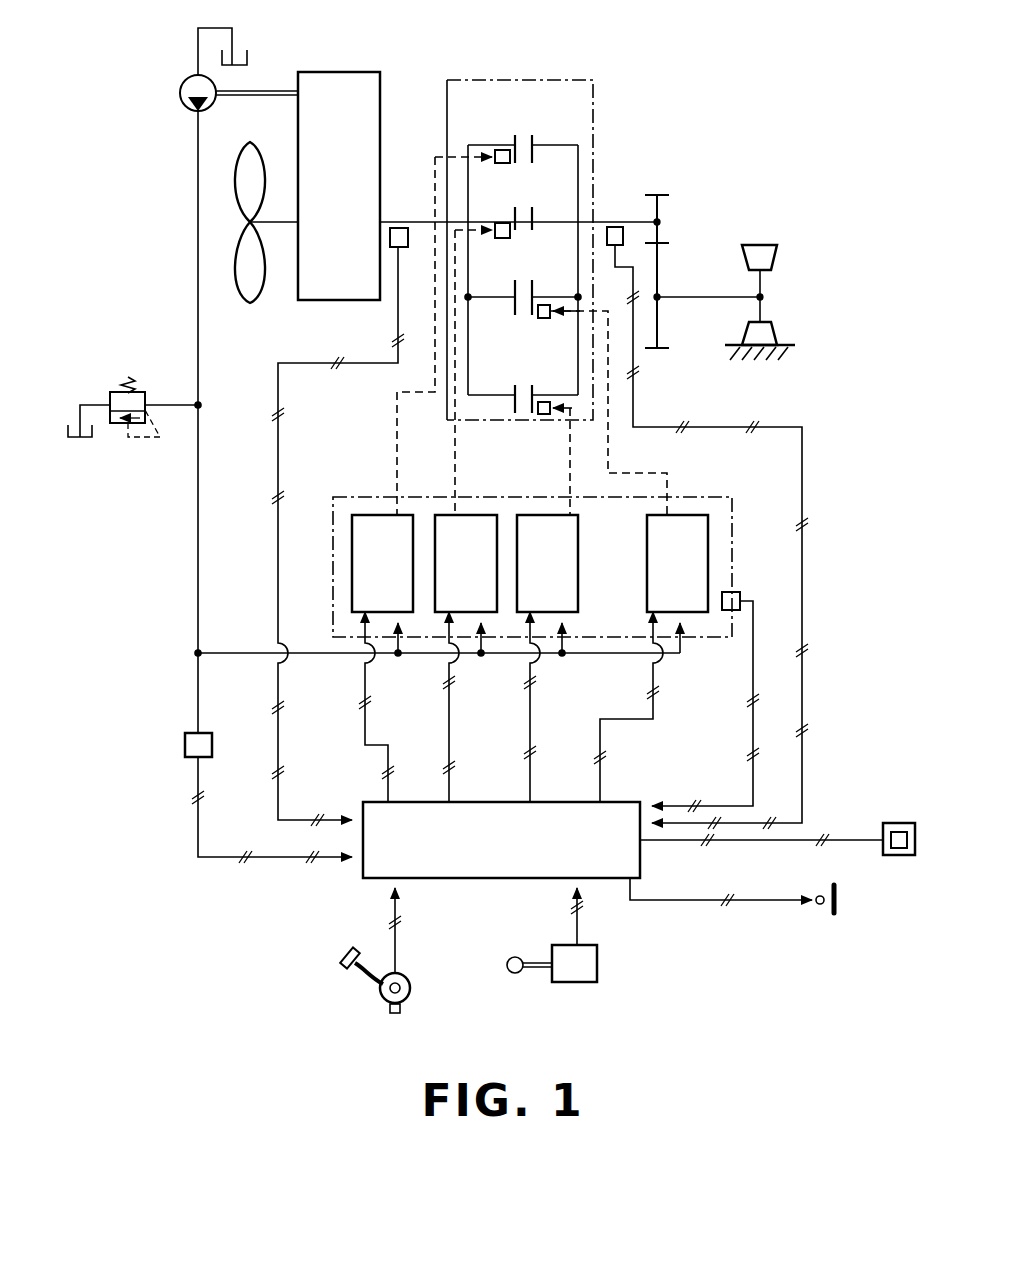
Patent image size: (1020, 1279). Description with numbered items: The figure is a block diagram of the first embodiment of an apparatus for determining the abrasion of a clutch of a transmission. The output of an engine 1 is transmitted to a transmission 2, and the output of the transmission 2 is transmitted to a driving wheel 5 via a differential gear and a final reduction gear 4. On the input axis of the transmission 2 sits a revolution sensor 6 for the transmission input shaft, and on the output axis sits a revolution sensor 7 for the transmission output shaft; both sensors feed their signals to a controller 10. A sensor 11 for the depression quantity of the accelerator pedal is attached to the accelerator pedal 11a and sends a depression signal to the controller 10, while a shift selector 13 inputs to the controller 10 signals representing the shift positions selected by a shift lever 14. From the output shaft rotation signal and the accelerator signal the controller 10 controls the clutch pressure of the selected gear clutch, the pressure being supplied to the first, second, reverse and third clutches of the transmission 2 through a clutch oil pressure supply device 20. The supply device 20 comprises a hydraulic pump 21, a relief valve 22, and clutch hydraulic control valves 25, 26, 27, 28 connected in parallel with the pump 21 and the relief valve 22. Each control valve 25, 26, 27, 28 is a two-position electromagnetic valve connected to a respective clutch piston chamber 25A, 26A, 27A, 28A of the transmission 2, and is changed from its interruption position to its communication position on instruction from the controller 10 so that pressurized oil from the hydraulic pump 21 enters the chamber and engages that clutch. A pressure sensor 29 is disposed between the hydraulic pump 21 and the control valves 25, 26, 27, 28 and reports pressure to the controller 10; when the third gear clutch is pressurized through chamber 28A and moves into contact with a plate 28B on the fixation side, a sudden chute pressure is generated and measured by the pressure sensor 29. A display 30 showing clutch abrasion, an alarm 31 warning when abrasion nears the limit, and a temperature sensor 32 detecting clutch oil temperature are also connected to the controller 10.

The engine 1 is at (330, 72).
The transmission 2 is at (593, 100).
The final reduction gear 4 is at (674, 236).
The driving wheel 5 is at (780, 258).
The revolution sensor for the transmission input shaft 6 is at (399, 228).
The revolution sensor for the transmission output shaft 7 is at (617, 219).
The controller 10 is at (452, 880).
The sensor for the depression quantity of the accelerator pedal 11 is at (395, 1014).
The accelerator pedal 11a is at (348, 974).
The shift selector 13 is at (598, 970).
The shift lever 14 is at (515, 975).
The clutch oil pressure supply device 20 is at (99, 153).
The hydraulic pump 21 is at (182, 98).
The relief valve 22 is at (128, 377).
The clutch hydraulic control valve 25 is at (368, 513).
The clutch hydraulic control valve 26 is at (475, 513).
The clutch hydraulic control valve 27 is at (550, 513).
The clutch hydraulic control valve 28 is at (692, 513).
The clutch piston chamber 25A is at (500, 148).
The clutch piston chamber 26A is at (498, 224).
The clutch piston chamber 27A is at (543, 415).
The clutch piston chamber for the 3rd gear 28A is at (537, 313).
The plate on the fixation side 28B is at (510, 296).
The pressure sensor 29 is at (185, 742).
The display 30 is at (893, 823).
The alarm 31 is at (840, 898).
The temperature sensor 32 is at (740, 595).